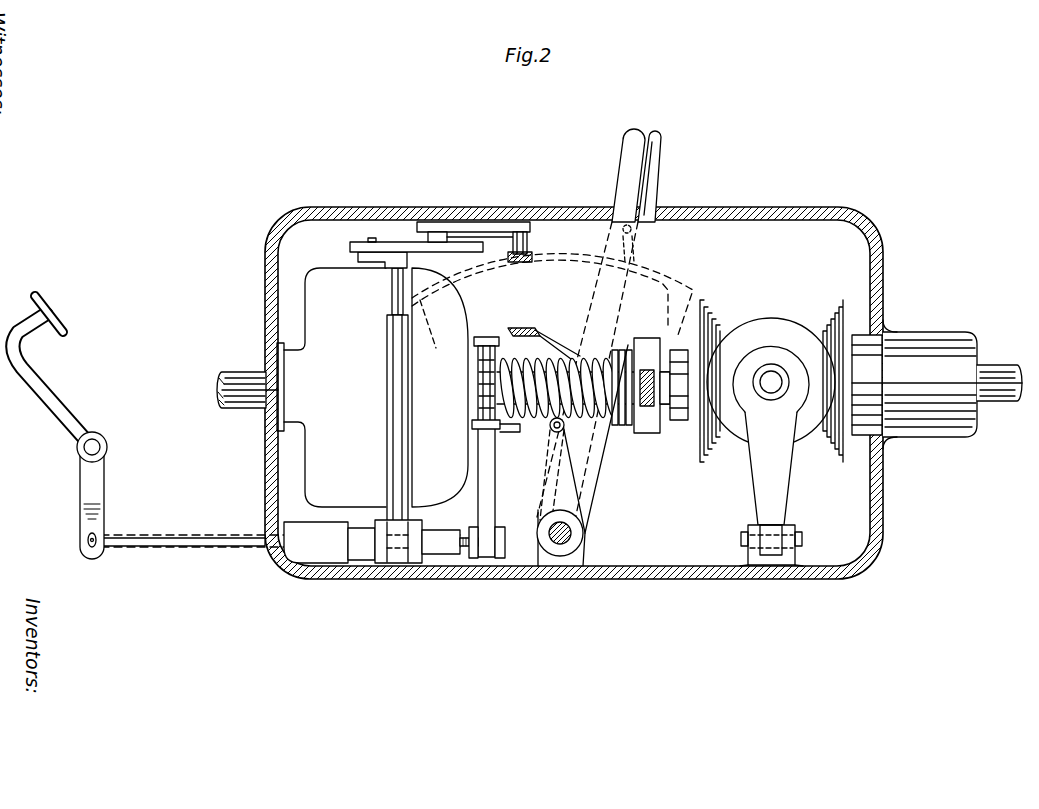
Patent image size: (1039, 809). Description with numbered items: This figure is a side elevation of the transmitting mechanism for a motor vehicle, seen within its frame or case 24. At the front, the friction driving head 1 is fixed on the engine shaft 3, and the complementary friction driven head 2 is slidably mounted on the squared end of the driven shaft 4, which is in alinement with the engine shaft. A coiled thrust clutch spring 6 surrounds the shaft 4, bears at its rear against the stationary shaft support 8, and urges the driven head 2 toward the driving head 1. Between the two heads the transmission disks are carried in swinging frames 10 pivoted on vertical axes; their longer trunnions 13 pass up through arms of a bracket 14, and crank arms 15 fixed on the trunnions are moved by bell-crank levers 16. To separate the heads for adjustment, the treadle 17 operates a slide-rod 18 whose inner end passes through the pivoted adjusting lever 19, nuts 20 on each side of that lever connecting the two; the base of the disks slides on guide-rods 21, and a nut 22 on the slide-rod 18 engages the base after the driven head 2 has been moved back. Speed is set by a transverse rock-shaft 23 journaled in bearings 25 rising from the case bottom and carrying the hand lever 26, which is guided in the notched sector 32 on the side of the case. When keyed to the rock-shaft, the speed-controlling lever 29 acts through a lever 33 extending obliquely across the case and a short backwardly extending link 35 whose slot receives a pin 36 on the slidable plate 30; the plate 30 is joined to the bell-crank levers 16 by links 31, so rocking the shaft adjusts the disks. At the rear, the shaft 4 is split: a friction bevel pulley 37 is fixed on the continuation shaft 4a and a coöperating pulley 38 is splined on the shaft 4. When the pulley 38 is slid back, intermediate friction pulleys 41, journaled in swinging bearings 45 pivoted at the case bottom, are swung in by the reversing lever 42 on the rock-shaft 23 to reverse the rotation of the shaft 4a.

The friction driving head 1 is at (318, 480).
The friction driven head 2 is at (445, 481).
The engine shaft 3 is at (237, 409).
The driven shaft 4 is at (590, 372).
The driven shaft continuation 4a is at (1005, 403).
The coiled thrust clutch spring 6 is at (616, 426).
The stationary shaft support 8 is at (650, 433).
The swinging frames 10 is at (394, 451).
The longer trunnions 13 is at (392, 290).
The bracket 14 is at (412, 563).
The crank arms 15 is at (358, 257).
The bell-crank levers 16 is at (390, 242).
The treadle 17 is at (60, 320).
The slide-rod 18 is at (207, 548).
The adjusting lever 19 is at (488, 490).
The nuts 20 is at (474, 558).
The guide-rods 21 is at (447, 553).
The nut 22 is at (370, 562).
The rock-shaft 23 is at (571, 532).
The case 24 is at (632, 580).
The bearings 25 is at (582, 552).
The hand lever 26 is at (622, 168).
The speed-controlling lever 29 is at (606, 477).
The slidable plate 30 is at (468, 227).
The links 31 is at (440, 232).
The sector 32 is at (657, 281).
The lever 33 is at (510, 331).
The backwardly extending link 35 is at (523, 262).
The pin 36 is at (528, 242).
The friction bevel pulley 37 is at (838, 312).
The coöperating pulley 38 is at (712, 313).
The intermediate friction pulleys 41 is at (775, 318).
The reversing lever 42 is at (550, 461).
The swinging bearings 45 is at (781, 481).